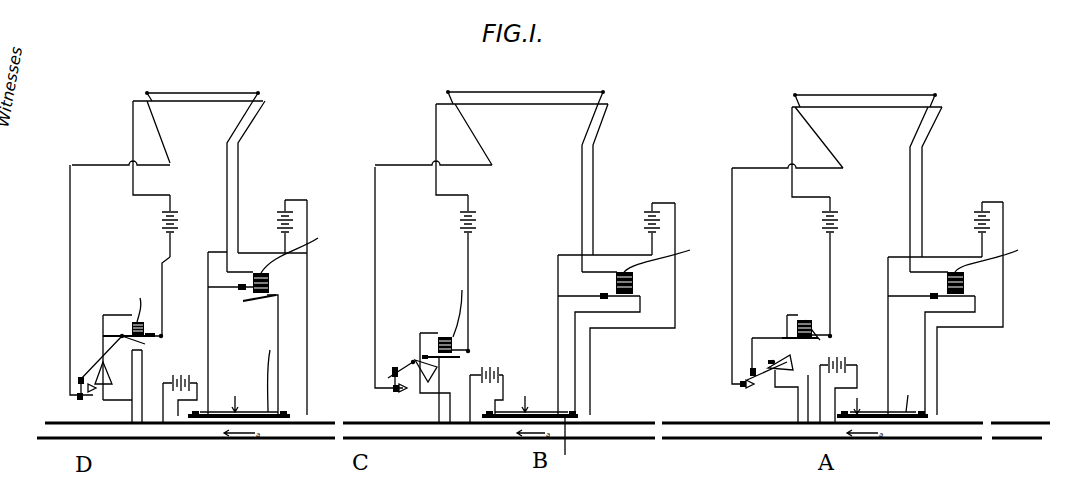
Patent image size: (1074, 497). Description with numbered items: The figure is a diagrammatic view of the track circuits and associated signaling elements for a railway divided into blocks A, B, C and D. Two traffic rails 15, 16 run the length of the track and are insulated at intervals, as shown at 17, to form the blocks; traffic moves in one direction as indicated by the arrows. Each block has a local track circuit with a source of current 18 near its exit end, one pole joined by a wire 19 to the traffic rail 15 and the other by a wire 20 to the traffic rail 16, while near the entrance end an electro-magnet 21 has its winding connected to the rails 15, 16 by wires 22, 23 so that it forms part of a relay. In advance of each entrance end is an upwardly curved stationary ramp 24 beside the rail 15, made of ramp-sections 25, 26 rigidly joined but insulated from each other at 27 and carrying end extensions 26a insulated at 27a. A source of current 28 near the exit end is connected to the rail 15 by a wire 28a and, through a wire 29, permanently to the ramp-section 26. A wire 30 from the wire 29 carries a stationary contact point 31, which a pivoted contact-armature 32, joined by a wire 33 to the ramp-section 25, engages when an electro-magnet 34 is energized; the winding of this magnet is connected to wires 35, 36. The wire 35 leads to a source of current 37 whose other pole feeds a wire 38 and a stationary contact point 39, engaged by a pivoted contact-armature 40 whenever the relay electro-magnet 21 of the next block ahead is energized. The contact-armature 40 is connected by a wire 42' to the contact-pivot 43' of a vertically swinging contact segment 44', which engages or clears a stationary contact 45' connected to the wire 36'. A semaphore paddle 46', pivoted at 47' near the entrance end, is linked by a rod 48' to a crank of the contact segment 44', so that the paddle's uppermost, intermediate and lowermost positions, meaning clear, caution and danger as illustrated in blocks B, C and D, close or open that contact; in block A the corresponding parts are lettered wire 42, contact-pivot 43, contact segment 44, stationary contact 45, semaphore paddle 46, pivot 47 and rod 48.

The traffic rail 15 is at (290, 427).
The traffic rail 16 is at (320, 441).
The rail insulation 17 is at (153, 441).
The source of current 18 is at (180, 374).
The wire 19 is at (166, 441).
The wire 20 is at (198, 382).
The electro-magnet 21 is at (140, 298).
The wire 22 is at (125, 405).
The wire 23 is at (143, 380).
The ramp 24 is at (866, 385).
The ramp-section 25 is at (590, 399).
The ramp-section 26 is at (213, 412).
The extension 26a is at (950, 476).
The insulation 27 is at (245, 421).
The insulation 27a is at (856, 488).
The source of current 28 is at (280, 220).
The wire 28a is at (307, 357).
The wire 29 is at (208, 290).
The wire 30 is at (208, 285).
The stationary contact point 31 is at (650, 246).
The contact-armature 32 is at (250, 303).
The wire 33 is at (278, 316).
The electro-magnet 34 is at (270, 290).
The wire 35 is at (241, 178).
The wire 36 is at (613, 262).
The wire 36' is at (388, 280).
The source of current 37 is at (162, 222).
The wire 38 is at (162, 270).
The stationary contact point 39 is at (165, 335).
The contact-armature 40 is at (164, 338).
The armature frame 42 is at (769, 327).
The wire 42' is at (261, 346).
The contact 43 is at (723, 363).
The contact-pivot 43' is at (212, 379).
The contact 44 is at (717, 381).
The contact segment 44' is at (209, 394).
The contact 45 is at (739, 398).
The stationary contact 45' is at (215, 402).
The electromagnet 46 is at (800, 310).
The semaphore paddle 46' is at (278, 364).
The contact 47 is at (787, 302).
The pivot 47' is at (224, 346).
The armature 48 is at (770, 324).
The rod 48' is at (238, 337).